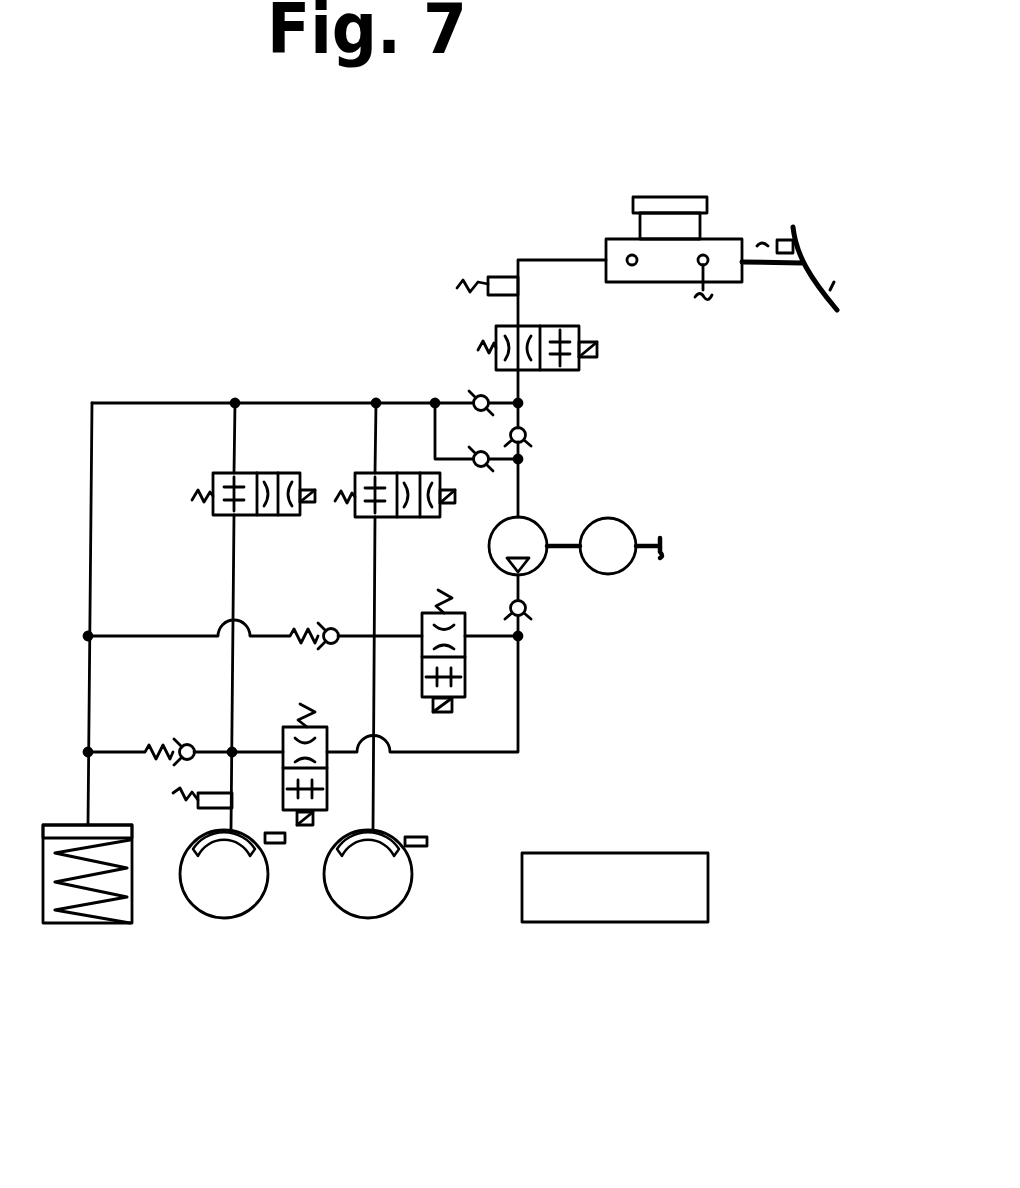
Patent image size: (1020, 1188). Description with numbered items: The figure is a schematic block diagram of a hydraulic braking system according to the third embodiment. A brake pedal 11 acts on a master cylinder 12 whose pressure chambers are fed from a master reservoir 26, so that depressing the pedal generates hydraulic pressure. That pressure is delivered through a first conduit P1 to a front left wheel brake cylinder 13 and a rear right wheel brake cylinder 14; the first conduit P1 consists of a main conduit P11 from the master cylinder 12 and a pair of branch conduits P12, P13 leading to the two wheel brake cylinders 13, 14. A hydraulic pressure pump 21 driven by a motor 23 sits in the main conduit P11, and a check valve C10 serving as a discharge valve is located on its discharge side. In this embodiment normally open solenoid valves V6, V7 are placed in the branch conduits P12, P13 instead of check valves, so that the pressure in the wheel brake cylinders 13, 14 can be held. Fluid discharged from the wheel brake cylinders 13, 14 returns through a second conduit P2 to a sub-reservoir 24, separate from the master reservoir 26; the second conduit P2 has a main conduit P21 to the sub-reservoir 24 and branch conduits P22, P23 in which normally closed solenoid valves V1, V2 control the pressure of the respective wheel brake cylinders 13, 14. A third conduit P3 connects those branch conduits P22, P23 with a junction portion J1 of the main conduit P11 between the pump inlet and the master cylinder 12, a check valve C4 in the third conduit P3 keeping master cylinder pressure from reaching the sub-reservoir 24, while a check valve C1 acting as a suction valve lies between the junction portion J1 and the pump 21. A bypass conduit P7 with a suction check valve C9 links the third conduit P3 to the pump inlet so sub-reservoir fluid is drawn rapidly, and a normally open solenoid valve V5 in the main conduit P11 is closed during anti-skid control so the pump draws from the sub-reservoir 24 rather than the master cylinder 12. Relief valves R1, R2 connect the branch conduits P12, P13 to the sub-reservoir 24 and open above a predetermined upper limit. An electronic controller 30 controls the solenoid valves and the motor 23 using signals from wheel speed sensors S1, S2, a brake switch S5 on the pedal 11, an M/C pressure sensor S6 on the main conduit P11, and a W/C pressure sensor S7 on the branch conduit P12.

The brake pedal 11 is at (835, 283).
The master cylinder 12 is at (606, 251).
The front left wheel brake cylinder 13 is at (190, 884).
The rear right wheel brake cylinder 14 is at (409, 882).
The hydraulic pressure pump 21 is at (534, 572).
The motor 23 is at (618, 576).
The sub-reservoir 24 is at (77, 925).
The master reservoir 26 is at (682, 197).
The electronic controller 30 is at (633, 852).
The wheel speed sensor S1 is at (275, 843).
The wheel speed sensor S2 is at (425, 846).
The brake switch S5 is at (758, 244).
The M/C pressure sensor S6 is at (492, 277).
The W/C pressure sensor S7 is at (207, 793).
The first conduit P1 is at (524, 305).
The second conduit P2 is at (268, 401).
The third conduit P3 is at (402, 402).
The bypass conduit P7 is at (422, 402).
The main conduit P11 is at (522, 414).
The branch conduit P12 is at (482, 757).
The branch conduit P13 is at (488, 637).
The main conduit P21 is at (120, 401).
The branch conduit P22 is at (233, 550).
The branch conduit P23 is at (374, 547).
The junction portion J1 is at (521, 406).
The normally closed solenoid valve V1 is at (217, 473).
The normally closed solenoid valve V2 is at (360, 476).
The normally open solenoid valve V5 is at (540, 370).
The normally open solenoid valve V6 is at (283, 737).
The normally open solenoid valve V7 is at (465, 693).
The check valve C1 is at (527, 432).
The check valve C4 is at (474, 394).
The check valve C9 is at (478, 468).
The check valve C10 is at (524, 613).
The relief valve R1 is at (180, 741).
The relief valve R2 is at (325, 626).